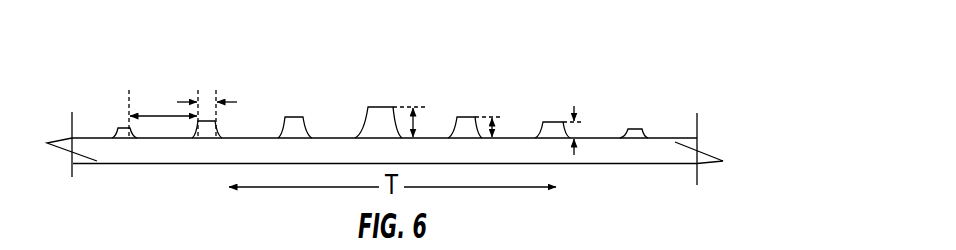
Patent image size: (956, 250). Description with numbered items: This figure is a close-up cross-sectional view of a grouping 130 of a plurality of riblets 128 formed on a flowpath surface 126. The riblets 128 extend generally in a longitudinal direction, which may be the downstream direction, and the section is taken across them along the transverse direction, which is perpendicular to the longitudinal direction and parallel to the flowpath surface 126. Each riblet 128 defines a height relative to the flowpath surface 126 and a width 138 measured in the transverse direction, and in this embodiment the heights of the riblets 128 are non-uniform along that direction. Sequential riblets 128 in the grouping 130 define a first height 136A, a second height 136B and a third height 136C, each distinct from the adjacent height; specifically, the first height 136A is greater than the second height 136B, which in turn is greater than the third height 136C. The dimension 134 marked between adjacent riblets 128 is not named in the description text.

The flowpath surface 126 is at (669, 132).
The riblets 128 is at (635, 130).
The grouping 130 is at (692, 71).
The spacing between protrusions 134 is at (153, 113).
The first height 136A is at (415, 122).
The second height 136B is at (494, 125).
The third height 136C is at (576, 112).
The width 138 is at (191, 101).